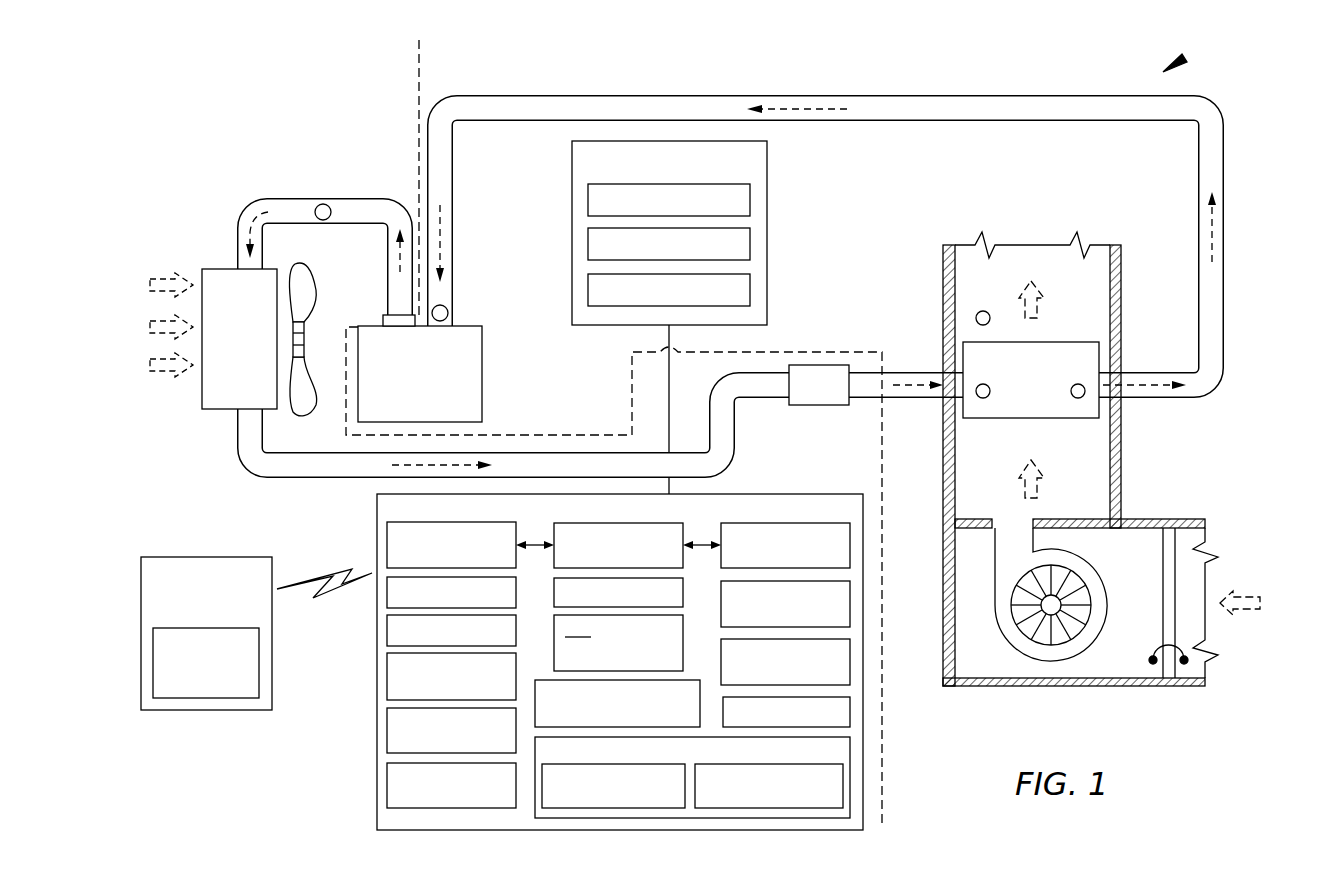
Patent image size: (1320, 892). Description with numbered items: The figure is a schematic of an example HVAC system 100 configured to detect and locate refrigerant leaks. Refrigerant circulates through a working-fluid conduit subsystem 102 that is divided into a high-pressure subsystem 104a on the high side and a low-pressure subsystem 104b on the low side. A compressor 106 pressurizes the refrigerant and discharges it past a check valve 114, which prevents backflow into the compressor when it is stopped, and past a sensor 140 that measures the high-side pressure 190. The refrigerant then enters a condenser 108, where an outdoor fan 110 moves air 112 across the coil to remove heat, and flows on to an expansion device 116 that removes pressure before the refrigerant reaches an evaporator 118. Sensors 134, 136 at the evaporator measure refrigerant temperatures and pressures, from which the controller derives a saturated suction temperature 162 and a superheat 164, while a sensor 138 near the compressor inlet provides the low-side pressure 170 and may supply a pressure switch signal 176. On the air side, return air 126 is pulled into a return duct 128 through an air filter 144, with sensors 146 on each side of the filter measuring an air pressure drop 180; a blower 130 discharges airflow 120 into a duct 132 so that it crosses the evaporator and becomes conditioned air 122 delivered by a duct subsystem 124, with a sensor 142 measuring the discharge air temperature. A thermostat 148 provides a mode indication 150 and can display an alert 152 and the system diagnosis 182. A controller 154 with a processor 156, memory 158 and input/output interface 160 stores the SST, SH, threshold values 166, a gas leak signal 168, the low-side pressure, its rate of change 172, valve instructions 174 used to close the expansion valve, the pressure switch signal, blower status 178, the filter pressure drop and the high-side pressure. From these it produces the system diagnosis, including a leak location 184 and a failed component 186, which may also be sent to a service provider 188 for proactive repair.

The HVAC system 100 is at (1185, 60).
The working-fluid conduit subsystem 102 is at (574, 96).
The high-pressure subsystem 104a is at (323, 178).
The low-pressure subsystem 104b is at (791, 66).
The compressor 106 is at (420, 374).
The condenser 108 is at (202, 395).
The outdoor fan 110 is at (312, 285).
The air 112 is at (160, 270).
The check valve 114 is at (383, 320).
The expansion device 116 is at (819, 385).
The evaporator 118 is at (1031, 380).
The airflow 120 is at (1044, 484).
The conditioned air 122 is at (1044, 303).
The duct subsystem 124 is at (1122, 290).
The return air 126 is at (1246, 617).
The return duct 128 is at (1145, 687).
The blower 130 is at (1090, 560).
The duct 132 is at (1122, 452).
The first evaporator sensor 134 is at (978, 397).
The second evaporator sensor 136 is at (1084, 397).
The sensor 138 is at (448, 308).
The sensor 140 is at (318, 206).
The sensor 142 is at (976, 318).
The air filter 144 is at (1177, 572).
The sensor 146 is at (1190, 660).
The thermostat 148 is at (770, 167).
The mode indication 150 is at (752, 197).
The alert 152 is at (752, 241).
The controller 154 is at (620, 662).
The processor 156 is at (618, 545).
The memory 158 is at (451, 545).
The input/output interface 160 is at (785, 545).
The saturated suction temperature 162 is at (451, 592).
The superheat 164 is at (451, 630).
The threshold value 166 is at (451, 676).
The gas leak signal 168 is at (451, 730).
The low-side pressure 170 is at (618, 592).
The rate of change 172 is at (618, 643).
The valve instructions 174 is at (617, 703).
The pressure switch signal 176 is at (785, 604).
The blower status 178 is at (785, 662).
The air pressure drop 180 is at (786, 712).
The system diagnosis 182 is at (752, 287).
The leak location 184 is at (613, 786).
The failed component 186 is at (769, 786).
The service provider 188 is at (256, 633).
The high-side pressure 190 is at (451, 785).